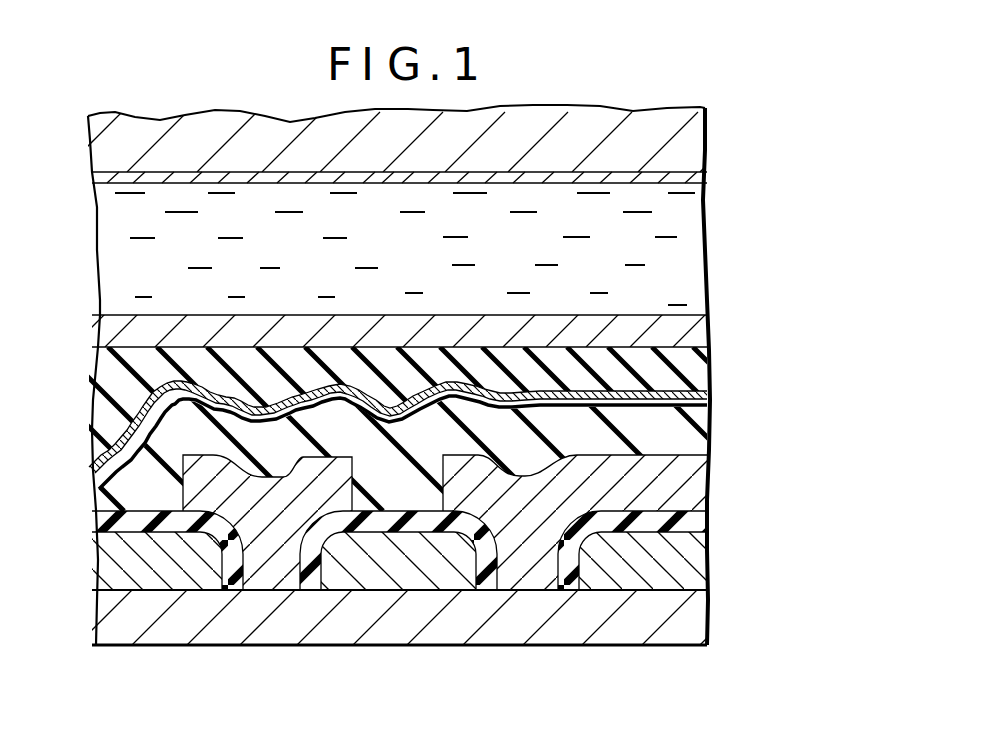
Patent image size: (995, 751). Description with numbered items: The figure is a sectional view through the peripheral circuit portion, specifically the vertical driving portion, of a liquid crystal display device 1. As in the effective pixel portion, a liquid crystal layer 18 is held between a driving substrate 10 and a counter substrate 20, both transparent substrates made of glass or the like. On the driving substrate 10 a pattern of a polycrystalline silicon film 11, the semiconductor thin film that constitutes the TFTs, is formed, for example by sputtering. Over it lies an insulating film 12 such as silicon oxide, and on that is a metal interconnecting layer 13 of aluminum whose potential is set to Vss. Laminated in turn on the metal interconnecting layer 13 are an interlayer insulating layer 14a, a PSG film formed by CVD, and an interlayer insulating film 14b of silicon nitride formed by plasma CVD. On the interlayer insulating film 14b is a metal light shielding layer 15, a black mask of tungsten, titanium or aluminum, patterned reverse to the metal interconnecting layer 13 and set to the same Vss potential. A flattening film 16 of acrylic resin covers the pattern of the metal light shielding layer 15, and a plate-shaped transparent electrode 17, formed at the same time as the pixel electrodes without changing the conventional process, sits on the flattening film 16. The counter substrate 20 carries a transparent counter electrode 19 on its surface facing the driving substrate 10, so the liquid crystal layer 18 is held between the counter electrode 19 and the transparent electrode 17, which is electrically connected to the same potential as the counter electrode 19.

The liquid crystal display device 1 is at (637, 71).
The driving substrate 10 is at (447, 630).
The polycrystalline silicon film 11 is at (640, 590).
The insulating film 12 is at (690, 523).
The metal interconnecting layer 13 is at (687, 485).
The interlayer insulating layer 14a is at (693, 432).
The interlayer insulating film 14b is at (695, 394).
The metal light shielding layer 15 is at (135, 419).
The flattening film 16 is at (687, 363).
The transparent electrode 17 is at (695, 330).
The liquid crystal layer 18 is at (685, 242).
The counter electrode 19 is at (682, 172).
The counter substrate 20 is at (683, 133).